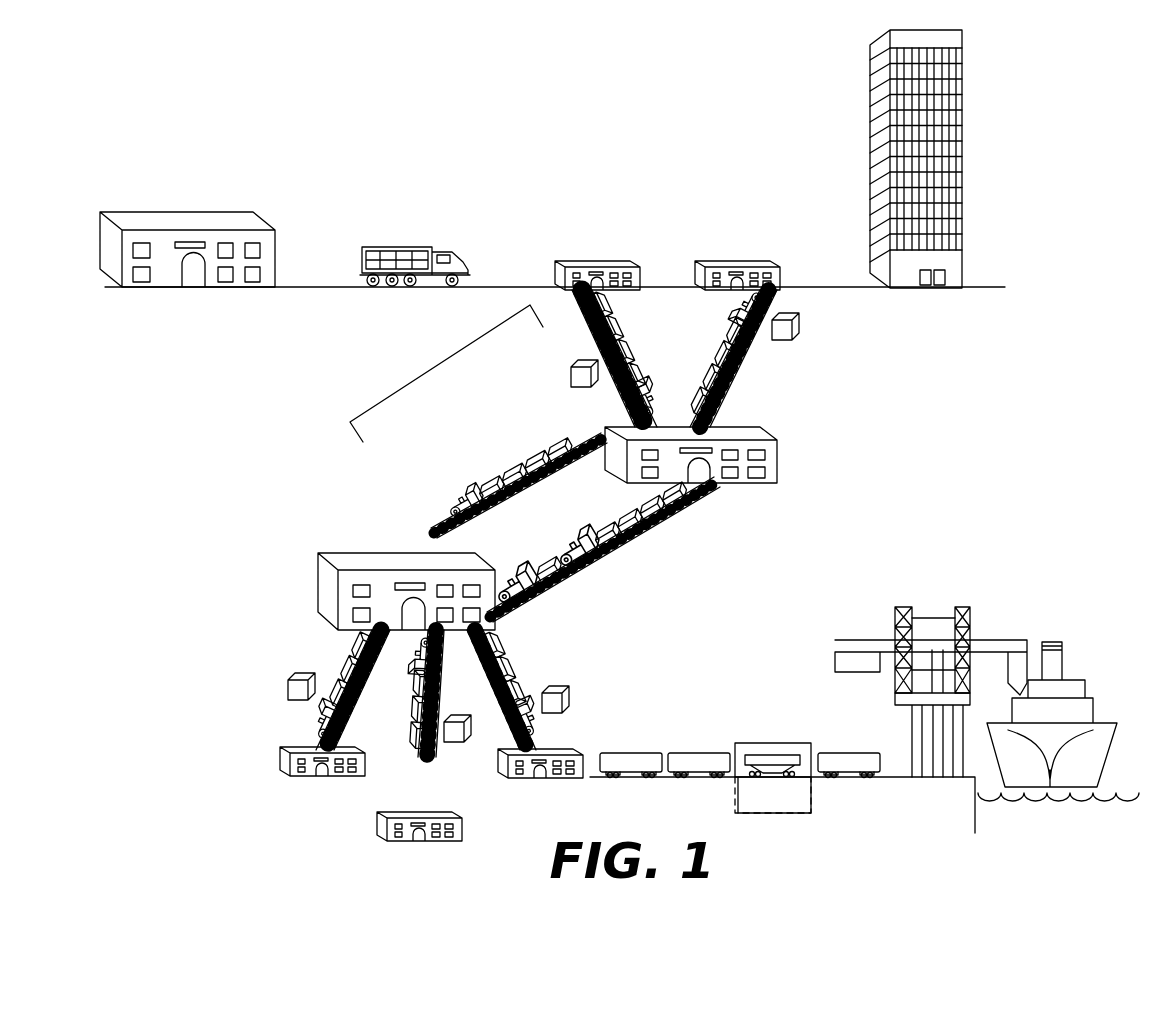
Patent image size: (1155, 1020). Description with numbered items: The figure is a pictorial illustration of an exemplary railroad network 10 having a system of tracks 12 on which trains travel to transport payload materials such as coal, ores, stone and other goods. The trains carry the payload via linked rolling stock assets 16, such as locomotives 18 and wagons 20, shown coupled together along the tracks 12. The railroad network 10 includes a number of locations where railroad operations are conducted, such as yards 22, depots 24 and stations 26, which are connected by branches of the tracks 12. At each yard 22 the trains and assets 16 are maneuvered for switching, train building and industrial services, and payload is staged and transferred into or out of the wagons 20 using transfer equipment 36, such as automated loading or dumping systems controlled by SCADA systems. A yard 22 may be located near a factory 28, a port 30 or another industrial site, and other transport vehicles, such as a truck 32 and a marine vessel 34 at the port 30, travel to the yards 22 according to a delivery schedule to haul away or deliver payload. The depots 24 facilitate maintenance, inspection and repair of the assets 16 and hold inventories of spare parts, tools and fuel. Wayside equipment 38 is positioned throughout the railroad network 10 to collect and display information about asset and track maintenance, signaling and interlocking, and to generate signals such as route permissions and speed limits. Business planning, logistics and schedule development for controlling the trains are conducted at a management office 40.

The railroad network 10 is at (364, 131).
The system of tracks 12 is at (577, 577).
The rolling stock assets 16 is at (445, 363).
The locomotive 18 is at (483, 486).
The wagon 20 is at (517, 477).
The yard 22 is at (595, 262).
The depot 24 is at (762, 433).
The station 26 is at (740, 262).
The factory 28 is at (190, 220).
The port 30 is at (1012, 614).
The truck 32 is at (422, 247).
The marine vessel 34 is at (1088, 698).
The transfer equipment 36 is at (778, 743).
The wayside equipment 38 is at (570, 368).
The management office 40 is at (963, 177).